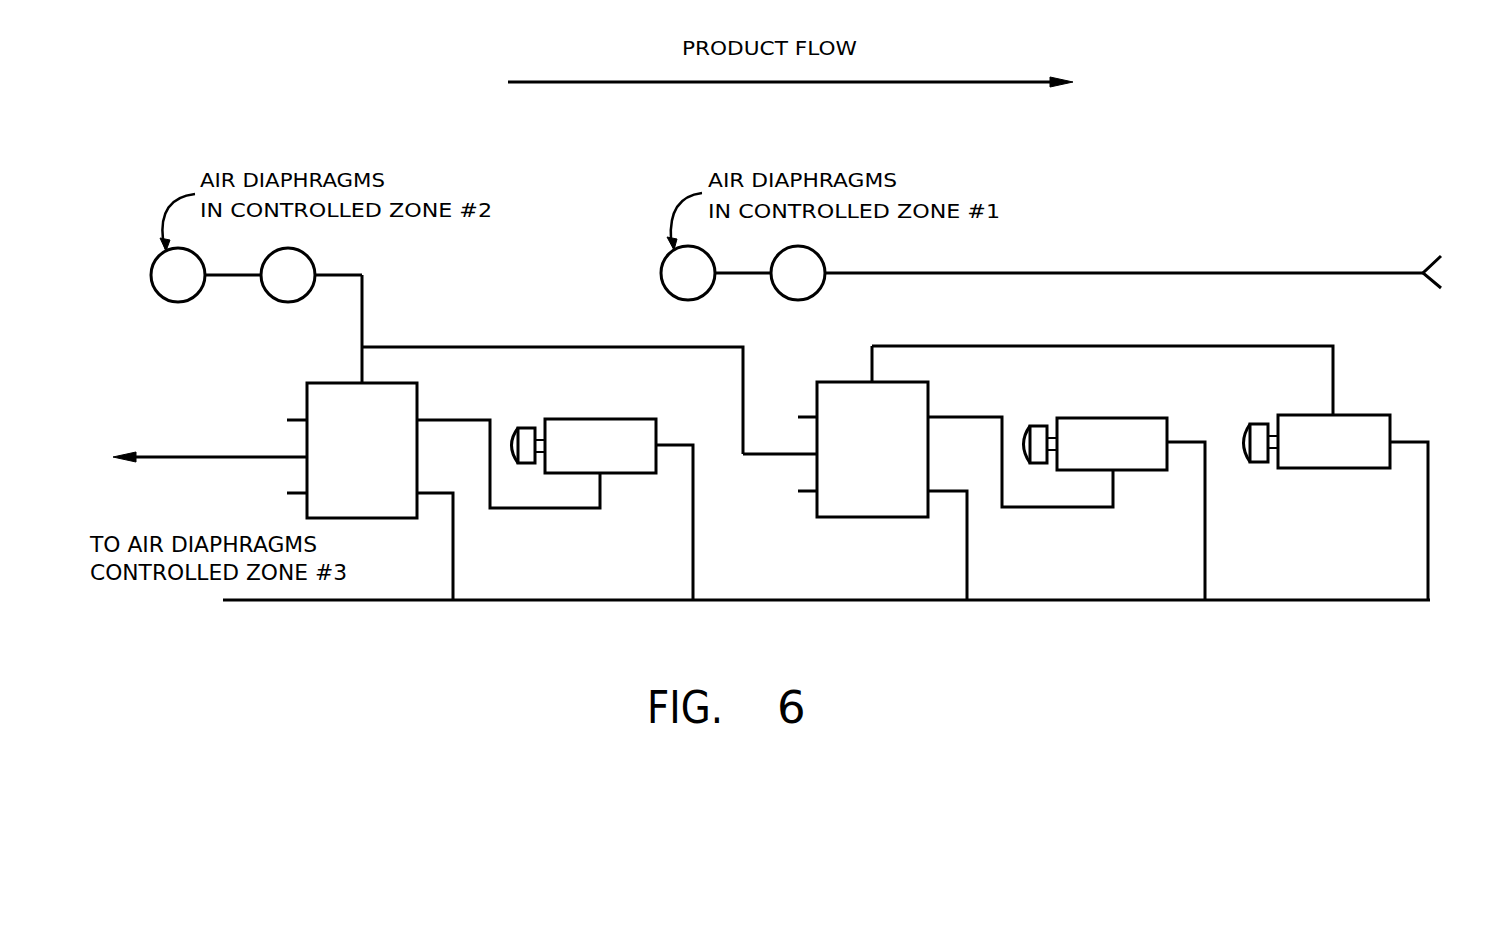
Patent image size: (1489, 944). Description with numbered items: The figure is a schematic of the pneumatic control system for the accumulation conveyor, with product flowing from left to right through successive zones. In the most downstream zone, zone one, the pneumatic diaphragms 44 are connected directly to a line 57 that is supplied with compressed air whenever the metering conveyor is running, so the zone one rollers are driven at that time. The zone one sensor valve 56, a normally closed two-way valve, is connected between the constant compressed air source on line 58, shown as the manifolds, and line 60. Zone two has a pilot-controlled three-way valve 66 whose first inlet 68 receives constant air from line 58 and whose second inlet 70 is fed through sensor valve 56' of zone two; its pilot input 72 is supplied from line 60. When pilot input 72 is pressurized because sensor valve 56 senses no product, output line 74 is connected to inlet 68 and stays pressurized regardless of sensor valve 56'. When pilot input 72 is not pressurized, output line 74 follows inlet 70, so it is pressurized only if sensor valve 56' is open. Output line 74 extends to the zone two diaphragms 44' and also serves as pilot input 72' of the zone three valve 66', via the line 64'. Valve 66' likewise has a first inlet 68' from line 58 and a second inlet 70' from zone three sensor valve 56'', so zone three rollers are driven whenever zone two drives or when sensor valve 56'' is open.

The pneumatic diaphragm 44 is at (759, 289).
The pneumatic diaphragms 44' is at (248, 301).
The sensor valve 56 is at (1362, 487).
The sensor valve 56' is at (1116, 494).
The sensor valve 56'' is at (605, 495).
The line 57 is at (1137, 272).
The line 58 is at (850, 602).
The line 60 is at (1335, 370).
The line 64' is at (552, 370).
The pilot-controlled valve 66 is at (851, 481).
The valve 66' is at (352, 480).
The first inlet 68 is at (988, 545).
The first inlet 68' is at (442, 517).
The second inlet 70 is at (1020, 432).
The second inlet 70' is at (508, 433).
The pilot input 72 is at (829, 364).
The input 72' is at (322, 329).
The output line 74 is at (777, 458).